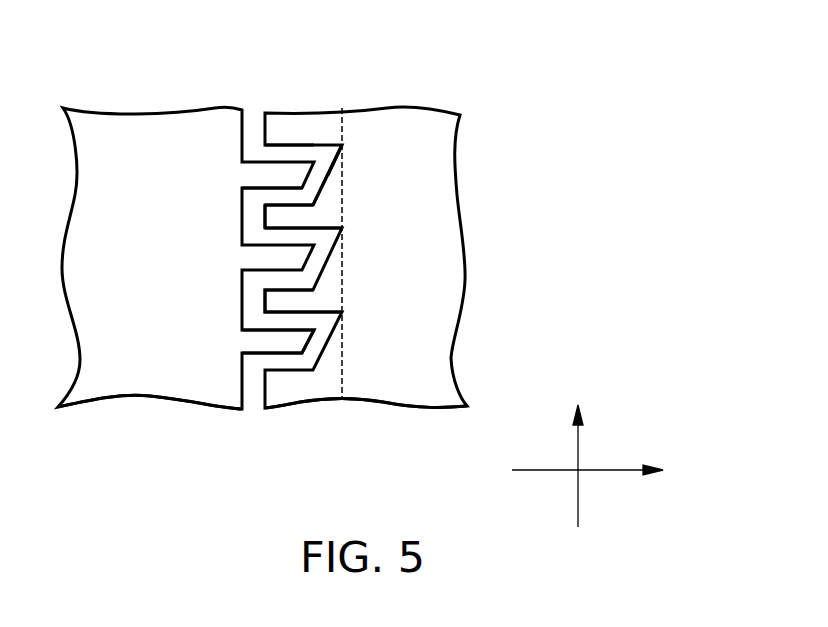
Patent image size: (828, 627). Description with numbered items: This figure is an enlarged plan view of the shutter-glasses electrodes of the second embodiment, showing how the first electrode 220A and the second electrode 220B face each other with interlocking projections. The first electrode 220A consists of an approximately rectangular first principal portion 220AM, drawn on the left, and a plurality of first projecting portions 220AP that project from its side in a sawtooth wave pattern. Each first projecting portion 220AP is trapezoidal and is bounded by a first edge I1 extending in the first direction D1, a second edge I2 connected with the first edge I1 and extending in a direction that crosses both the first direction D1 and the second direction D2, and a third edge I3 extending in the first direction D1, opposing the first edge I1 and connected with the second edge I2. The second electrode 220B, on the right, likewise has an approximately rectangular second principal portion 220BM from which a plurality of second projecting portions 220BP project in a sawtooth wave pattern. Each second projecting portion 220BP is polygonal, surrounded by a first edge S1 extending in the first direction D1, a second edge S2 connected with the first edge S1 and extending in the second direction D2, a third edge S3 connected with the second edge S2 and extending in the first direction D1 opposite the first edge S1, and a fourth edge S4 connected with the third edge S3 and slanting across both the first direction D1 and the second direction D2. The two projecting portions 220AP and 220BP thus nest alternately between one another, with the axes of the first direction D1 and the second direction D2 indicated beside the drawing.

The first electrode 220A is at (163, 112).
The second electrode 220B is at (388, 110).
The first principal portion 220AM is at (143, 392).
The first projecting portion 220AP is at (258, 340).
The second projecting portion 220BP is at (318, 292).
The second principal portion 220BM is at (405, 388).
The first edge I1 is at (292, 161).
The second edge I2 is at (329, 155).
The third edge I3 is at (262, 189).
The first edge S1 is at (318, 229).
The second edge S2 is at (265, 218).
The third edge S3 is at (293, 205).
The fourth edge S4 is at (322, 191).
The first direction D1 is at (604, 470).
The second direction D2 is at (576, 449).